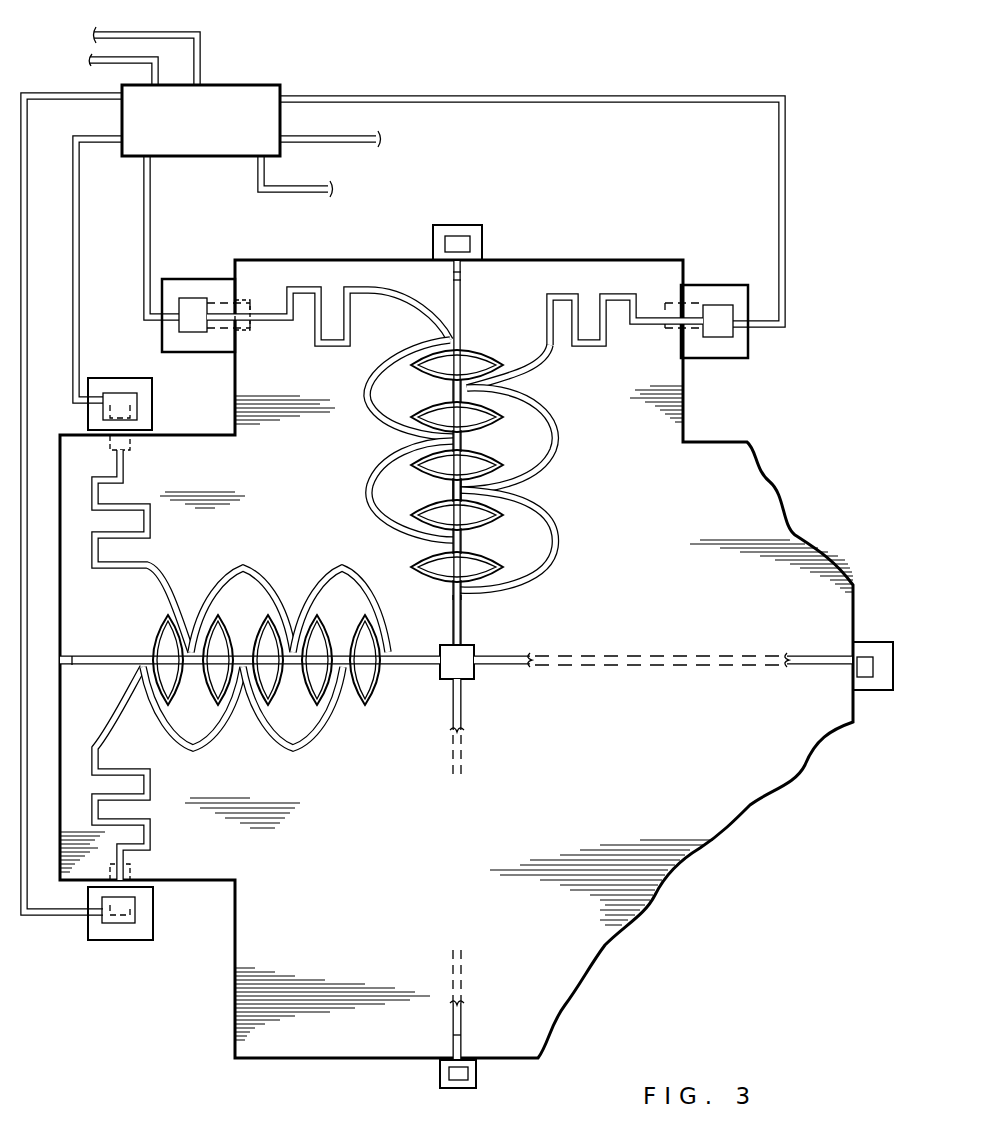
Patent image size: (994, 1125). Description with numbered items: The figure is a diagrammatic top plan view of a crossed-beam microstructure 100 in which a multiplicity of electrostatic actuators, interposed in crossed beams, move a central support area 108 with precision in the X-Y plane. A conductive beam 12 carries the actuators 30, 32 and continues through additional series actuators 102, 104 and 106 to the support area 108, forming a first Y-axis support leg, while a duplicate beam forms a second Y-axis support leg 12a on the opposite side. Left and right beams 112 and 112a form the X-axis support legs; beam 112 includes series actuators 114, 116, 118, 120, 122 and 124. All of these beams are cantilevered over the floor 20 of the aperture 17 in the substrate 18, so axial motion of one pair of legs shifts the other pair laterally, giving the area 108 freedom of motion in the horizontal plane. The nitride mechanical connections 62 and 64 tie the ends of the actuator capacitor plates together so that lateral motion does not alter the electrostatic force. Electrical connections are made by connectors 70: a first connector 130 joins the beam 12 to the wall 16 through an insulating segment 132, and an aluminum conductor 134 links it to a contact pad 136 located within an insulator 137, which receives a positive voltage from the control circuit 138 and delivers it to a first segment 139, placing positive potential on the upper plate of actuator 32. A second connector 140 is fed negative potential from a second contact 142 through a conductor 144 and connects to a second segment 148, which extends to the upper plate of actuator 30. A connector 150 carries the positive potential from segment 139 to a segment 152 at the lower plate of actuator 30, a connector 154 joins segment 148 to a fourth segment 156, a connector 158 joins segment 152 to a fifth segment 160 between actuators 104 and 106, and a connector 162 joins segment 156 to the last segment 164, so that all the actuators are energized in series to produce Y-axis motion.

The beam 12 is at (462, 308).
The second Y-axis support leg 12a is at (465, 712).
The wall 16 is at (377, 271).
The aperture 17 is at (218, 461).
The substrate 18 is at (122, 367).
The floor 20 is at (275, 480).
The actuator 30 is at (527, 440).
The actuator 32 is at (470, 350).
The spacer 62 is at (395, 388).
The spacer 64 is at (506, 356).
The connectors 70 is at (530, 376).
The microstructure 100 is at (604, 546).
The series actuator 102 is at (420, 470).
The series actuator 104 is at (500, 528).
The series actuator 106 is at (428, 577).
The central support area 108 is at (475, 670).
The left beam 112 is at (128, 655).
The right beam 112a is at (810, 665).
The series actuator 114 is at (163, 618).
The series actuator 116 is at (205, 700).
The series actuator 118 is at (223, 620).
The series actuator 120 is at (290, 705).
The series actuator 122 is at (323, 610).
The series actuator 124 is at (357, 705).
The connector 130 is at (370, 292).
The insulating segment 132 is at (242, 305).
The aluminum conductor 134 is at (245, 328).
The electrical contact pad 136 is at (178, 318).
The insulator 137 is at (190, 279).
The control circuit 138 is at (237, 84).
The first segment 139 is at (453, 312).
The second connector 140 is at (548, 290).
The second contact 142 is at (714, 305).
The conductor 144 is at (668, 310).
The second segment 148 is at (408, 393).
The connector 150 is at (408, 372).
The segment 152 is at (497, 457).
The connector 154 is at (540, 418).
The fourth beam segment 156 is at (413, 500).
The connector 158 is at (380, 465).
The fifth segment 160 is at (490, 550).
The connector 162 is at (540, 517).
The last segment 164 is at (462, 605).